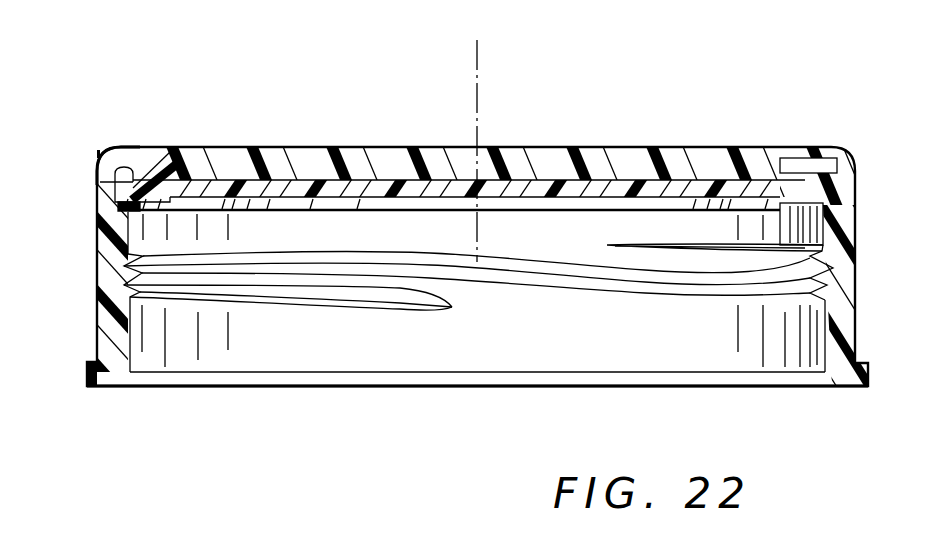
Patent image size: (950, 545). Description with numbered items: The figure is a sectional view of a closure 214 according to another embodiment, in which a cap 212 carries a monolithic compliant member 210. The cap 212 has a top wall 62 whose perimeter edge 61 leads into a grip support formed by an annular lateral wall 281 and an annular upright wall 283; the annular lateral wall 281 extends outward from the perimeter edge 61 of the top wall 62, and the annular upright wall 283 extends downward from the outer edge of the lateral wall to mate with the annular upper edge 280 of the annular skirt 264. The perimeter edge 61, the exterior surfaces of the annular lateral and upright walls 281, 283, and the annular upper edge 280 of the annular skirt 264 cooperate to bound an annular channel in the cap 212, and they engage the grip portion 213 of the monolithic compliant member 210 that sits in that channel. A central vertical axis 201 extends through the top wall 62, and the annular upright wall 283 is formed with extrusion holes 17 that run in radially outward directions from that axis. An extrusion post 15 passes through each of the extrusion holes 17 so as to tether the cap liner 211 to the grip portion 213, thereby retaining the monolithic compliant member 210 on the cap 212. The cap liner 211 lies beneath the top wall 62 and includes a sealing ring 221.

The monolithic compliant member 210 is at (853, 144).
The cap 212 is at (626, 144).
The grip portion 213 is at (137, 142).
The closure 214 is at (113, 106).
The top wall 62 is at (548, 152).
The perimeter edge 61 is at (158, 157).
The extrusion post 15 is at (124, 168).
The extrusion holes 17 is at (117, 190).
The annular lateral wall 281 is at (148, 170).
The annular upright wall 283 is at (122, 212).
The annular upper edge 280 is at (103, 225).
The central vertical axis 201 is at (478, 97).
The cap liner 211 is at (496, 212).
The sealing ring 221 is at (745, 203).
The annular skirt 264 is at (843, 296).